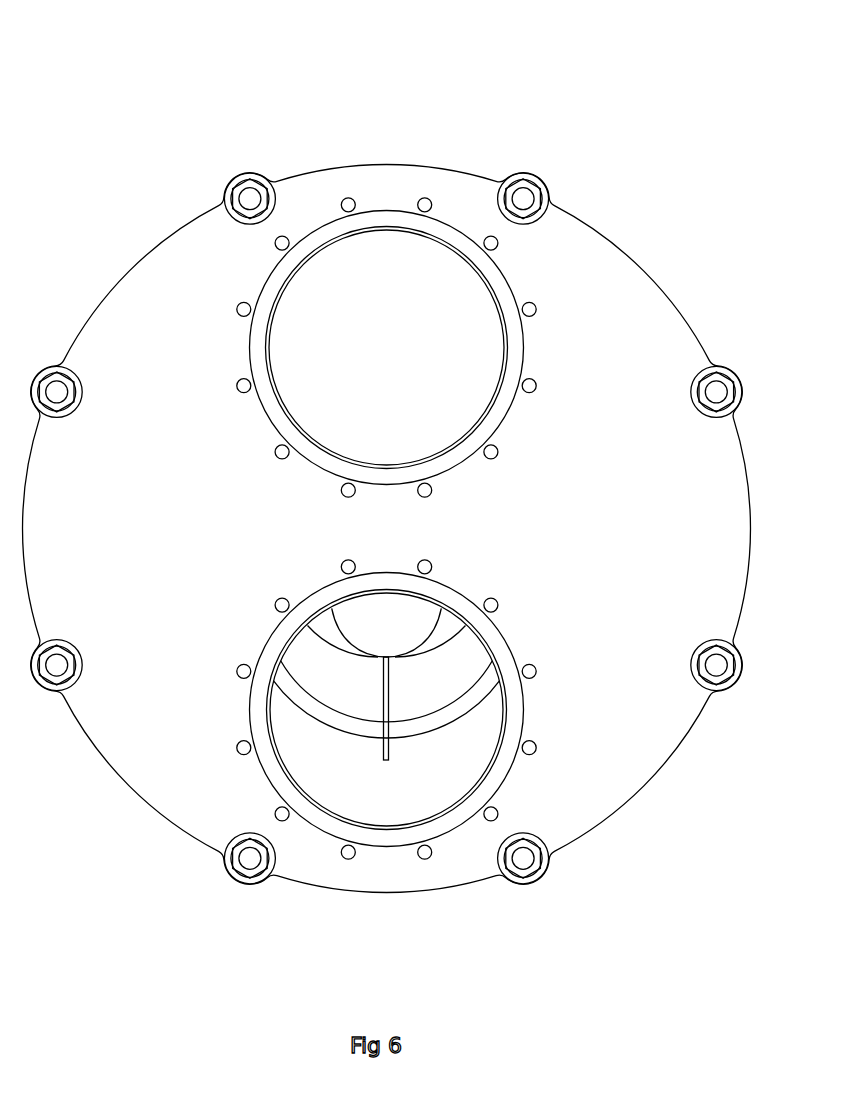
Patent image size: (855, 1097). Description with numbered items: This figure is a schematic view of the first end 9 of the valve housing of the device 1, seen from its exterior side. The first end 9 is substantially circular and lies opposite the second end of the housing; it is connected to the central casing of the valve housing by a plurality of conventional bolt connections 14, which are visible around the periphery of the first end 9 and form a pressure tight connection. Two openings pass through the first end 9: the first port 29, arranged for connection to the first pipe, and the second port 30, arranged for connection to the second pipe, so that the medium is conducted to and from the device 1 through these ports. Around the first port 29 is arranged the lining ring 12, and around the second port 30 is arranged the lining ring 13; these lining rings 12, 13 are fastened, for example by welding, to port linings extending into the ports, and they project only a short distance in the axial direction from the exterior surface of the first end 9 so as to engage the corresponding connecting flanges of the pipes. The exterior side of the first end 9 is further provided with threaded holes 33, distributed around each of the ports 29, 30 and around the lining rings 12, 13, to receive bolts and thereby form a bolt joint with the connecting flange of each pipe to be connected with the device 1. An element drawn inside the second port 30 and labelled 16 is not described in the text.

The device 1 is at (503, 78).
The first end 9 is at (152, 775).
The lining ring 12 is at (495, 275).
The lining ring 13 is at (500, 778).
The bolt connection 14 is at (250, 197).
The inner insert 16 is at (323, 713).
The first port 29 is at (391, 240).
The second port 30 is at (386, 813).
The threaded hole 33 is at (423, 197).